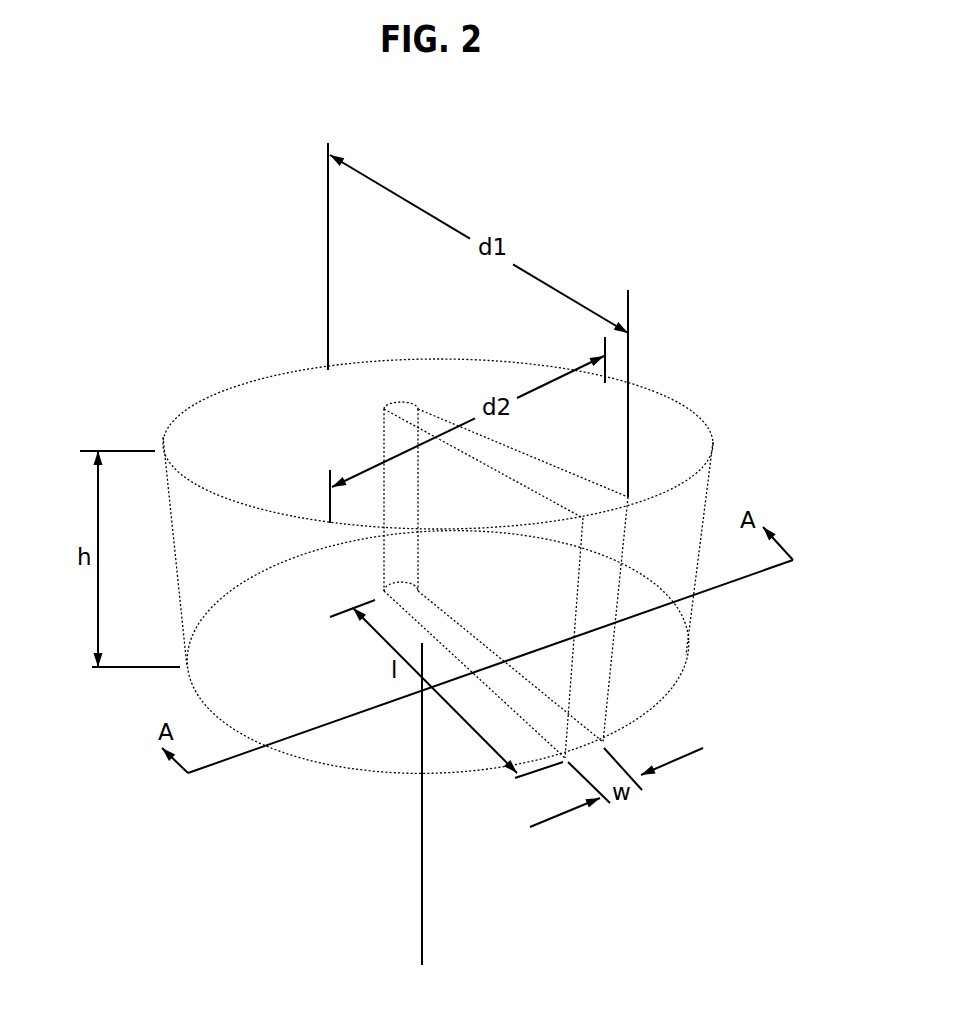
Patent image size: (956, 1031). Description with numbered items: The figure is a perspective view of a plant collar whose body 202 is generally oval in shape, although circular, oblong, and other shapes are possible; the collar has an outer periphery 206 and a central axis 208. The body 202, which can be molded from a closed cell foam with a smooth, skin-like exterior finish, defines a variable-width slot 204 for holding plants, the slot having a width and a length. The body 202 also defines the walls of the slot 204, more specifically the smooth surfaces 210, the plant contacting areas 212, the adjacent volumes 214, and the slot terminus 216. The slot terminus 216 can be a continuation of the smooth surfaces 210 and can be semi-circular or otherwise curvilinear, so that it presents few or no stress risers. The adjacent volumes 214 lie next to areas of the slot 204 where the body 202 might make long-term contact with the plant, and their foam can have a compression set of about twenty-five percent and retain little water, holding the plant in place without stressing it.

The body 202 is at (449, 560).
The variable-width slot 204 is at (600, 673).
The periphery 206 is at (688, 418).
The central axis 208 is at (422, 918).
The smooth surfaces 210 is at (552, 488).
The plant contacting areas 212 is at (500, 475).
The adjacent volumes 214 is at (497, 487).
The slot terminus 216 is at (393, 387).